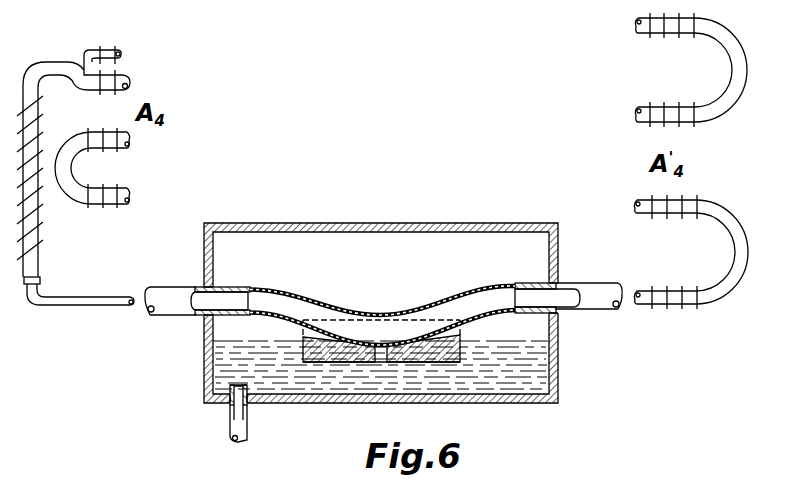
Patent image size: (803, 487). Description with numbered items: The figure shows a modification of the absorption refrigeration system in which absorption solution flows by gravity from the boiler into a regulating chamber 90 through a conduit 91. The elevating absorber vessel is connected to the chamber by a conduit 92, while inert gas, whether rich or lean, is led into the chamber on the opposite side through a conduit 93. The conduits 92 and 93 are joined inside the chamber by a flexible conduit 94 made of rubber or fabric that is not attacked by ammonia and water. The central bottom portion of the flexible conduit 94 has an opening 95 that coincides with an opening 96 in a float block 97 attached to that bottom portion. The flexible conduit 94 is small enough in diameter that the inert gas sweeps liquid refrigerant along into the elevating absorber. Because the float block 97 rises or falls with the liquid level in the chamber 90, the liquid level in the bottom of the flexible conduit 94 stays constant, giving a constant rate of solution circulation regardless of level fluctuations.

The regulating chamber 90 is at (421, 222).
The conduit 91 is at (247, 429).
The conduit 92 is at (583, 310).
The conduit 93 is at (186, 313).
The flexible conduit 94 is at (470, 292).
The opening 95 is at (386, 340).
The opening 96 is at (380, 350).
The float block 97 is at (417, 363).